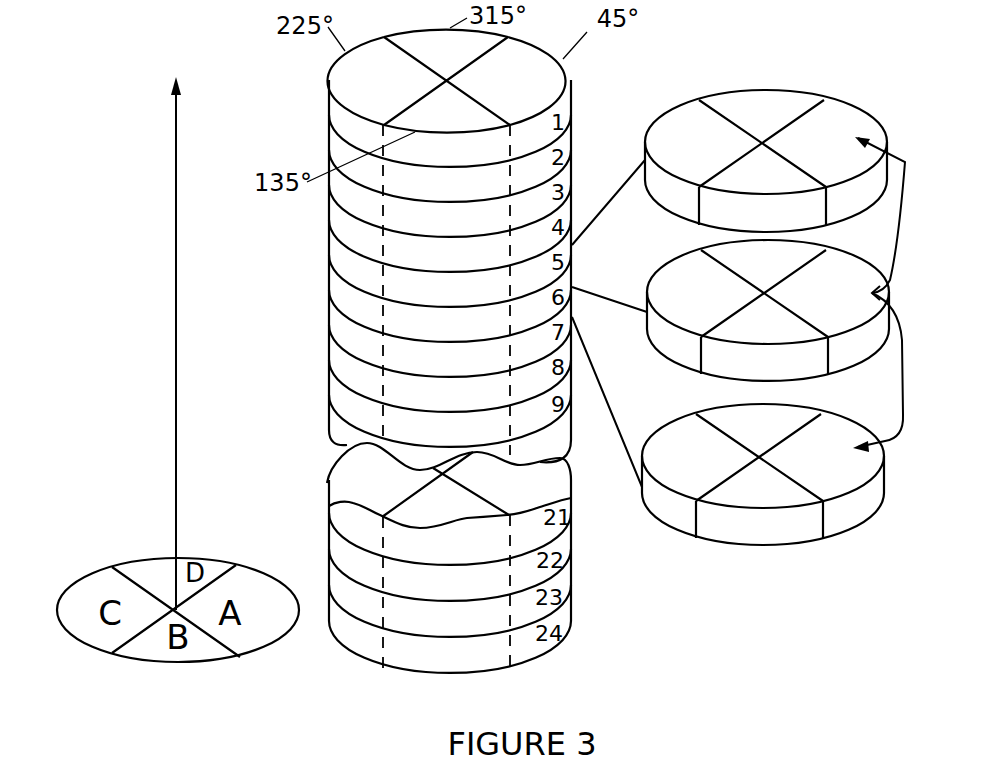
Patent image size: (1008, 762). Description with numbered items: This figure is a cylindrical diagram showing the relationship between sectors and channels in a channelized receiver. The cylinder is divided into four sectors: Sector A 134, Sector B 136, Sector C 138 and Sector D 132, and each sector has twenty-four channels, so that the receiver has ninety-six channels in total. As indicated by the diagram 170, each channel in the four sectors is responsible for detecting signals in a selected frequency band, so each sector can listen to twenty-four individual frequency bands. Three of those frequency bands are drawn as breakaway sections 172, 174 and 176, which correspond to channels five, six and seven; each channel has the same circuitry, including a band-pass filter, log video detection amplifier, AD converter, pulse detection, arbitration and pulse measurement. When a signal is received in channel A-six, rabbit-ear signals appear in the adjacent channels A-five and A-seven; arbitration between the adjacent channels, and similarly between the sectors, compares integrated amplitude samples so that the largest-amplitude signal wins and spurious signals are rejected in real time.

The Sector D 132 is at (422, 40).
The Sector A 134 is at (523, 53).
The Sector B 136 is at (413, 115).
The Sector C 138 is at (345, 78).
The diagram 170 is at (177, 155).
The breakaway section 172 is at (748, 90).
The breakaway section 174 is at (661, 263).
The breakaway section 176 is at (672, 420).